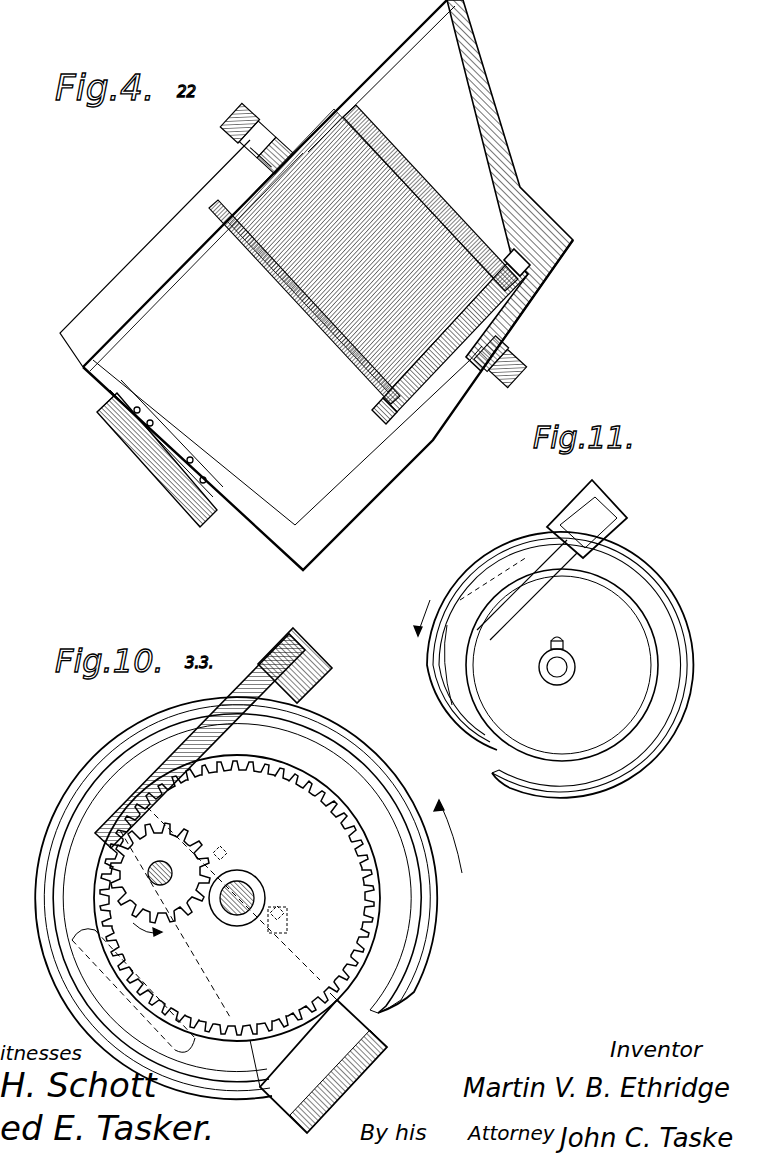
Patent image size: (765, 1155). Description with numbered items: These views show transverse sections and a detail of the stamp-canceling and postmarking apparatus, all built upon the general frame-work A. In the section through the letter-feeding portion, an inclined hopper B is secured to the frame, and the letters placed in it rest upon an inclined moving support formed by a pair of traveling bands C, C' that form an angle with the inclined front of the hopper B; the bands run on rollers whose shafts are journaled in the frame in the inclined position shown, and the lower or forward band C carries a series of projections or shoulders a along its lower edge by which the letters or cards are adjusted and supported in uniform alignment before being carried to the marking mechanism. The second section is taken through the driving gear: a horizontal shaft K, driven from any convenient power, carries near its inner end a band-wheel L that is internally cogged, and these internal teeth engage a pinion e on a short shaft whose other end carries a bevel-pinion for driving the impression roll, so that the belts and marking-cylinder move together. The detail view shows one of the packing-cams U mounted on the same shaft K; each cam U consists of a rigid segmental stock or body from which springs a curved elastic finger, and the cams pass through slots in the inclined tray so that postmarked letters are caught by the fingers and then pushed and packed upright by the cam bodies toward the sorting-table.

In FIG. 4, the inclined hopper B is at (481, 73).
In FIG. 4, the lower inclined band C is at (455, 302).
In FIG. 4, the traveling belt C' is at (363, 254).
In FIG. 4, the projections or shoulders a is at (530, 273).
In FIG. 4, the frame-work A is at (150, 453).
In FIG. 10, the frame-work A is at (350, 1085).
In FIG. 10, the band-wheel L is at (362, 897).
In FIG. 10, the horizontal shaft K is at (250, 886).
In FIG. 10, the pinion e is at (180, 852).
In FIG. 11, the packing-cam U is at (572, 796).
In FIG. 10, the packing-cam U is at (420, 937).